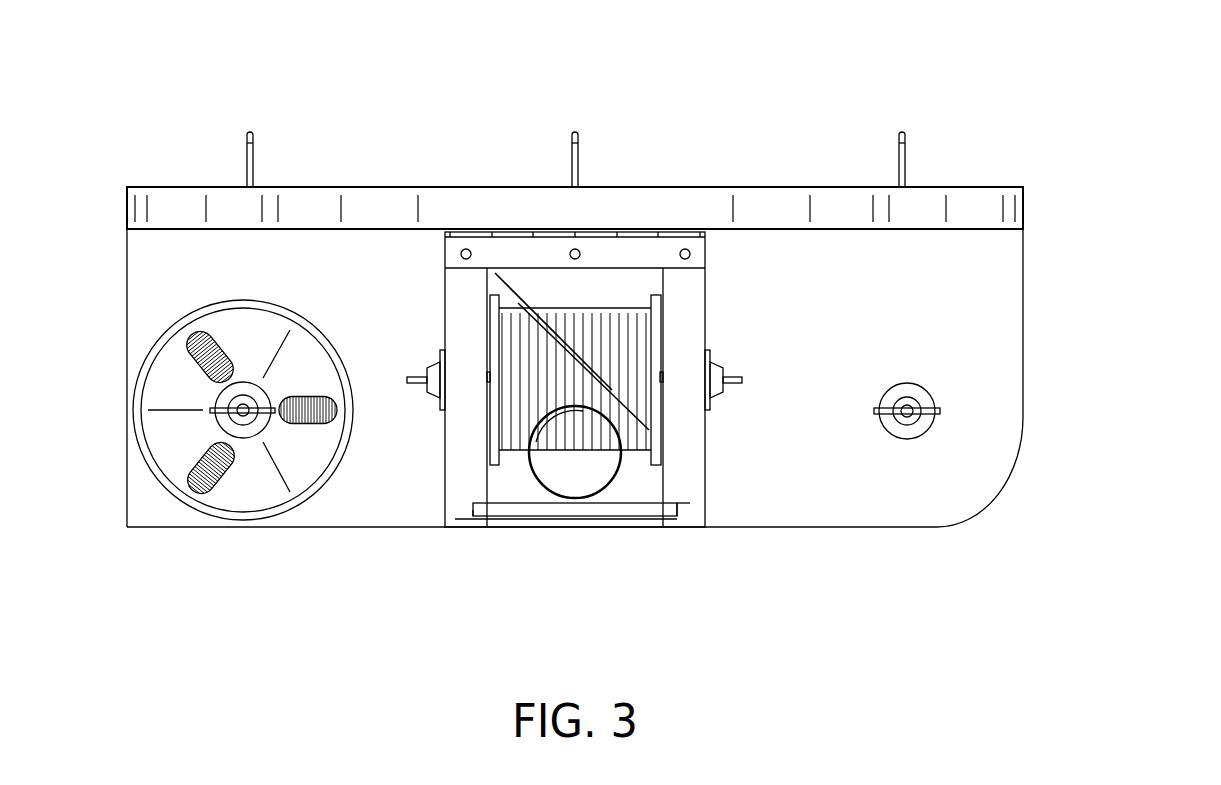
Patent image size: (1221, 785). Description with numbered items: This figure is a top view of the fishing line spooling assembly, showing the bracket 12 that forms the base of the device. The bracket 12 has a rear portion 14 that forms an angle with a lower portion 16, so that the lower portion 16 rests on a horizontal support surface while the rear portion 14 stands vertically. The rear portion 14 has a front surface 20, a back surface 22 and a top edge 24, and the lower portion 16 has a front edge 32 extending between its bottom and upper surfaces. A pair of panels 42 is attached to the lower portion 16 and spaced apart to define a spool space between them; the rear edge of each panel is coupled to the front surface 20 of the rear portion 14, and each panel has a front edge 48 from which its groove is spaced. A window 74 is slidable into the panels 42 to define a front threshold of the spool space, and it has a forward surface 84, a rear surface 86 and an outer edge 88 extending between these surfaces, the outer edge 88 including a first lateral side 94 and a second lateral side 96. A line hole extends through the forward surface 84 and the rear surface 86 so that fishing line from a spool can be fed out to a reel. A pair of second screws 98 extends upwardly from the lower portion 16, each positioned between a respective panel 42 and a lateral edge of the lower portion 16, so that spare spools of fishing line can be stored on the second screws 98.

The bracket 12 is at (121, 176).
The rear portion 14 is at (1018, 187).
The lower portion 16 is at (1023, 380).
The front surface 20 is at (970, 232).
The back surface 22 is at (834, 187).
The top edge 24 is at (778, 203).
The front edge 32 is at (857, 530).
The panels 42 is at (443, 478).
The front edge 48 is at (447, 527).
The window 74 is at (630, 517).
The forward surface 84 is at (548, 517).
The rear surface 86 is at (499, 496).
The outer edge 88 is at (678, 512).
The first lateral side 94 is at (473, 512).
The second lateral side 96 is at (677, 507).
The second screws 98 is at (243, 416).